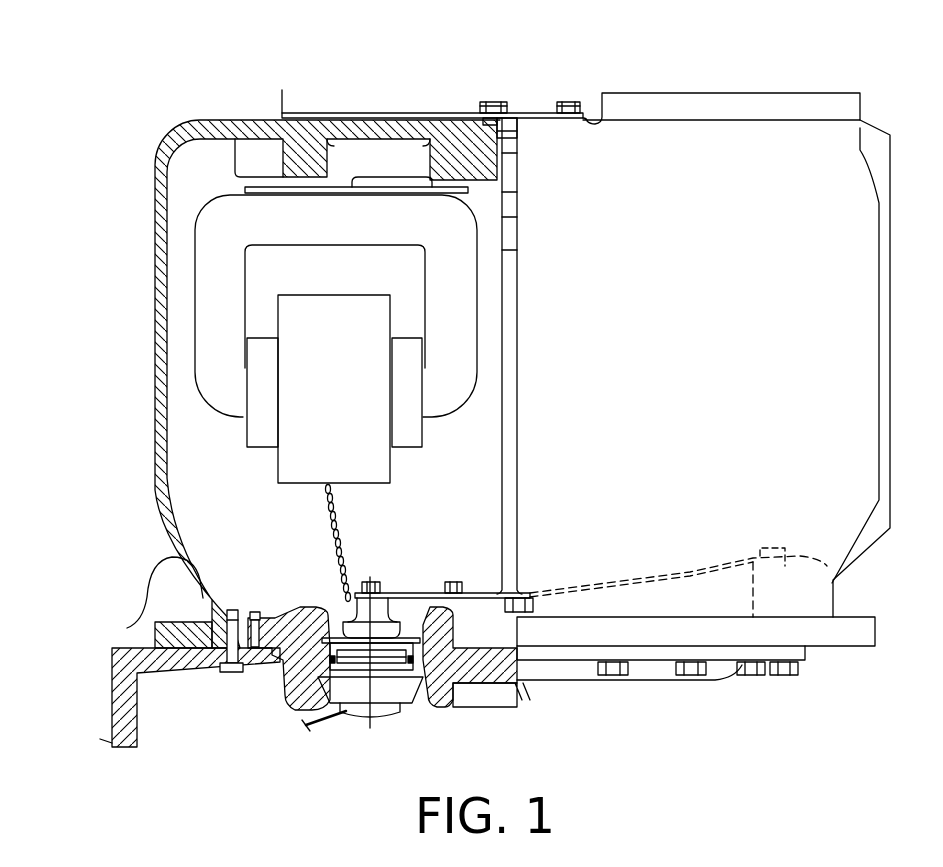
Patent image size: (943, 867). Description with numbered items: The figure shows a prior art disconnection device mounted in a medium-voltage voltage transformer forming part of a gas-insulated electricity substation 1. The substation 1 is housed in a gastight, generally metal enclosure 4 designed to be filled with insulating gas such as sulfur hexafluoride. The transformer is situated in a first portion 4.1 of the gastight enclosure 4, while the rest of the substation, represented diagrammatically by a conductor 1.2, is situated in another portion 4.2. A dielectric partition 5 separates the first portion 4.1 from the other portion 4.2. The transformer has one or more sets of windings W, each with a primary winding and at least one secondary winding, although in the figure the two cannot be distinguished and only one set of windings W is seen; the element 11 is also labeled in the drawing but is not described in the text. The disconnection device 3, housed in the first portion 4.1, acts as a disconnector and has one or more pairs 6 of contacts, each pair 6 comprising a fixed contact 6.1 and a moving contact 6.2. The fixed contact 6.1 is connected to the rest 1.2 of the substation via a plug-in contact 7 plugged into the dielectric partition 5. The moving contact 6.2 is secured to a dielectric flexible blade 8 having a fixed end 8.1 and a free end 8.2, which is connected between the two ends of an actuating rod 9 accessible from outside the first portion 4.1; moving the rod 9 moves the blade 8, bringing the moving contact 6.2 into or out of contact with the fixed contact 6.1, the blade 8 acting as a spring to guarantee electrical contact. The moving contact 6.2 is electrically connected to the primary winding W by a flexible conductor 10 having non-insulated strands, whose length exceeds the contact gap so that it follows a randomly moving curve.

The gas-insulated electricity substation 1 is at (270, 52).
The conductor 1.2 is at (333, 720).
The disconnection device 3 is at (447, 520).
The gastight enclosure 4 is at (55, 617).
The first portion of the gastight enclosure 4.1 is at (127, 628).
The other portion of the gastight enclosure 4.2 is at (120, 702).
The dielectric partition 5 is at (287, 677).
The pair of contacts 6 is at (253, 493).
The fixed contact 6.1 is at (338, 606).
The moving contact 6.2 is at (350, 607).
The plug-in contact 7 is at (410, 690).
The dielectric flexible blade 8 is at (662, 558).
The fixed end of the flexible blade 8.1 is at (777, 548).
The free end of the flexible blade 8.2 is at (396, 590).
The actuating rod 9 is at (508, 455).
The flexible conductor 10 is at (340, 502).
The housing 11 is at (207, 158).
The windings W is at (318, 405).